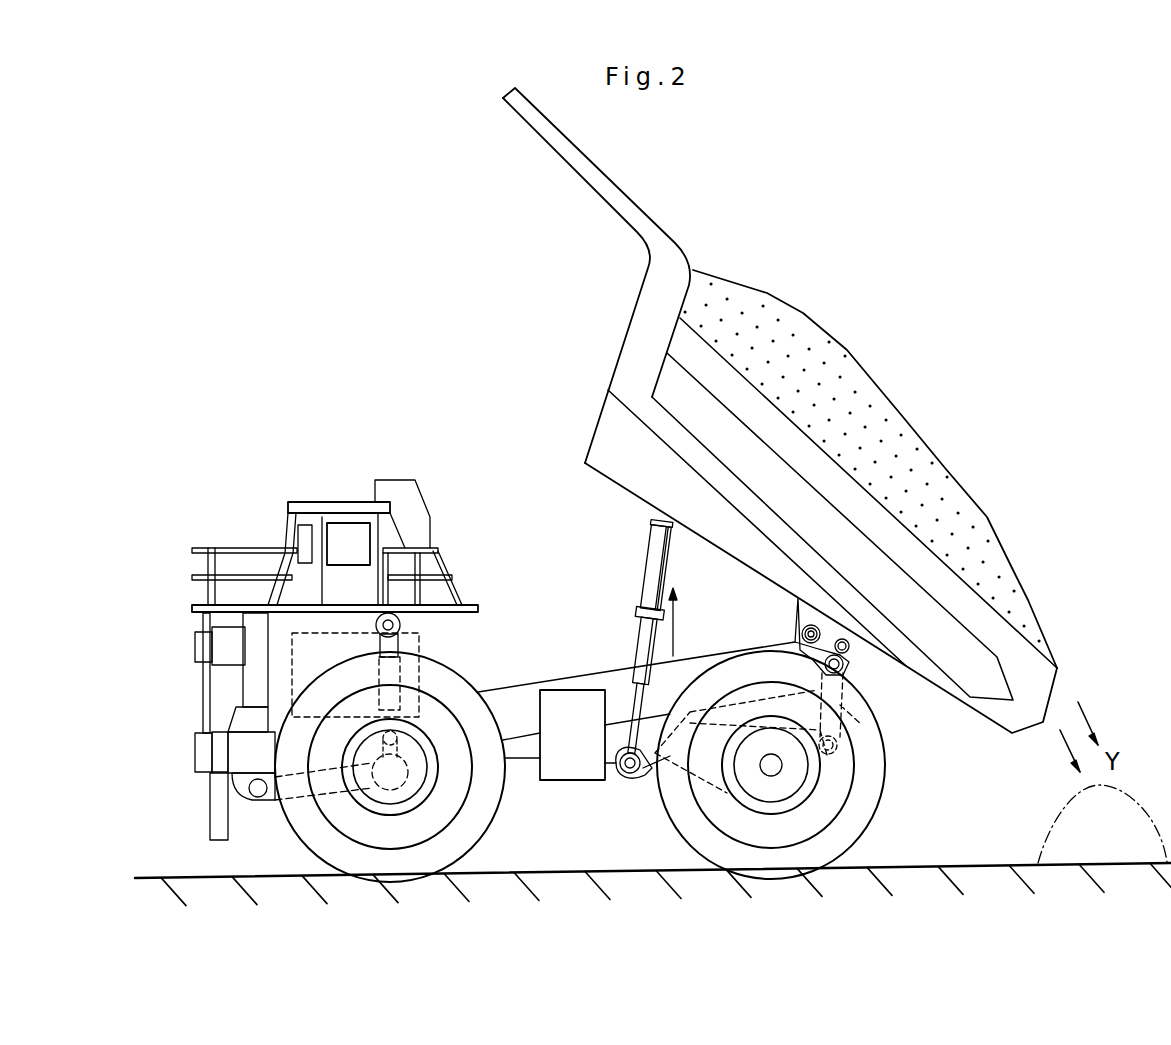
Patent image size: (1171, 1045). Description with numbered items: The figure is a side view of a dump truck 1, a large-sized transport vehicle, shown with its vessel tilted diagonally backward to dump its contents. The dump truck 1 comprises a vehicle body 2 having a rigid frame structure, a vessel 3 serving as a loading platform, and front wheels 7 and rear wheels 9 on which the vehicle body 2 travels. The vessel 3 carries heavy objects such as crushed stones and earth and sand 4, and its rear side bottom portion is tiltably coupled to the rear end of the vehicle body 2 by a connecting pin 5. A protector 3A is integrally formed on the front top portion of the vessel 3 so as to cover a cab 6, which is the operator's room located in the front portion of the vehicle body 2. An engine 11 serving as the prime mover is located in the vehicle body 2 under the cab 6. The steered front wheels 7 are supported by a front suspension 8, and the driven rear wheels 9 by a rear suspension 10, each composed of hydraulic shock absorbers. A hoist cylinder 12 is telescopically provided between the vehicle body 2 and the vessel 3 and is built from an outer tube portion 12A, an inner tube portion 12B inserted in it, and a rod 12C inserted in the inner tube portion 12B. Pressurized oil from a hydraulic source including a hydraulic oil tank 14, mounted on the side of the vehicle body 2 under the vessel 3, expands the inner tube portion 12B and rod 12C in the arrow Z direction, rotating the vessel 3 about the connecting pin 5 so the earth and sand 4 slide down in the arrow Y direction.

The dump truck 1 is at (368, 478).
The vehicle body 2 is at (508, 692).
The vessel 3 is at (953, 570).
The protector 3A is at (568, 150).
The earth and sand 4 is at (818, 360).
The connecting pin 5 is at (803, 632).
The cab 6 is at (296, 517).
The front wheels 7 is at (303, 827).
The front suspension 8 is at (393, 648).
The rear wheels 9 is at (857, 808).
The rear suspension 10 is at (862, 725).
The engine 11 is at (292, 672).
The hoist cylinder 12 is at (638, 604).
The outer tube portion 12A is at (656, 592).
The inner tube portion 12B is at (646, 641).
The rod 12C is at (618, 775).
The hydraulic oil tank 14 is at (563, 775).